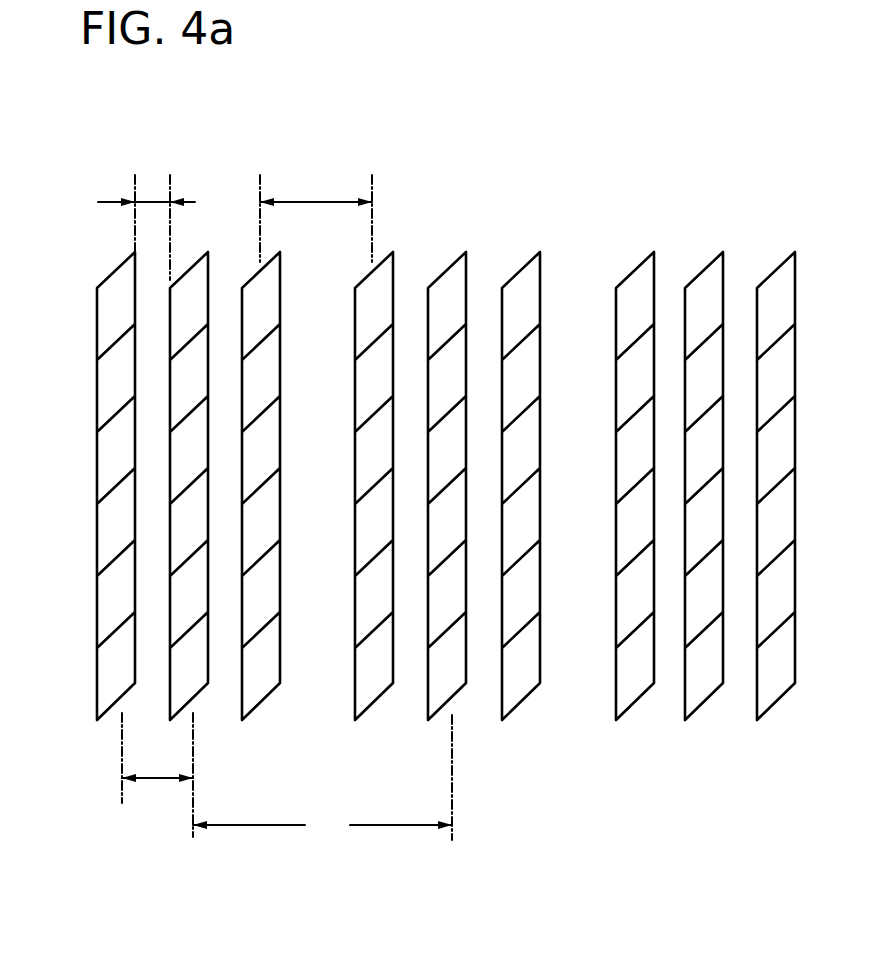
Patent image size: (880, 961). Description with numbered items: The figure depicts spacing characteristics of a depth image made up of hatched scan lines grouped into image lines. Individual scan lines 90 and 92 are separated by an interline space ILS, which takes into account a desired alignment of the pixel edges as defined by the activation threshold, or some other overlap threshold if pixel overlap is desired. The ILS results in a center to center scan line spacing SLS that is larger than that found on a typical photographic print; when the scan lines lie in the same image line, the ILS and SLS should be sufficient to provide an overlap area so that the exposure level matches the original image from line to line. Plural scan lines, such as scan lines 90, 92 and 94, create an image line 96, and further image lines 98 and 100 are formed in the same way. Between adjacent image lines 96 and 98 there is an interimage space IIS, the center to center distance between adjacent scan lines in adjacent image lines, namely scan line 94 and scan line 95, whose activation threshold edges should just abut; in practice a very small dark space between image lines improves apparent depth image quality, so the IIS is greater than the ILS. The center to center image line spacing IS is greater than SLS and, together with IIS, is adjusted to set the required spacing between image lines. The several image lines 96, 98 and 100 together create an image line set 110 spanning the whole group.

The scan line 90 is at (97, 395).
The scan line 92 is at (208, 283).
The scan line 94 is at (280, 348).
The scan line 95 is at (377, 702).
The image line 96 is at (98, 867).
The image line 98 is at (353, 867).
The image line 100 is at (615, 872).
The image line set 110 is at (93, 128).
The interline space ILS is at (152, 200).
The interimage space IIS is at (308, 200).
The scan line spacing SLS is at (155, 780).
The image line spacing IS is at (322, 778).